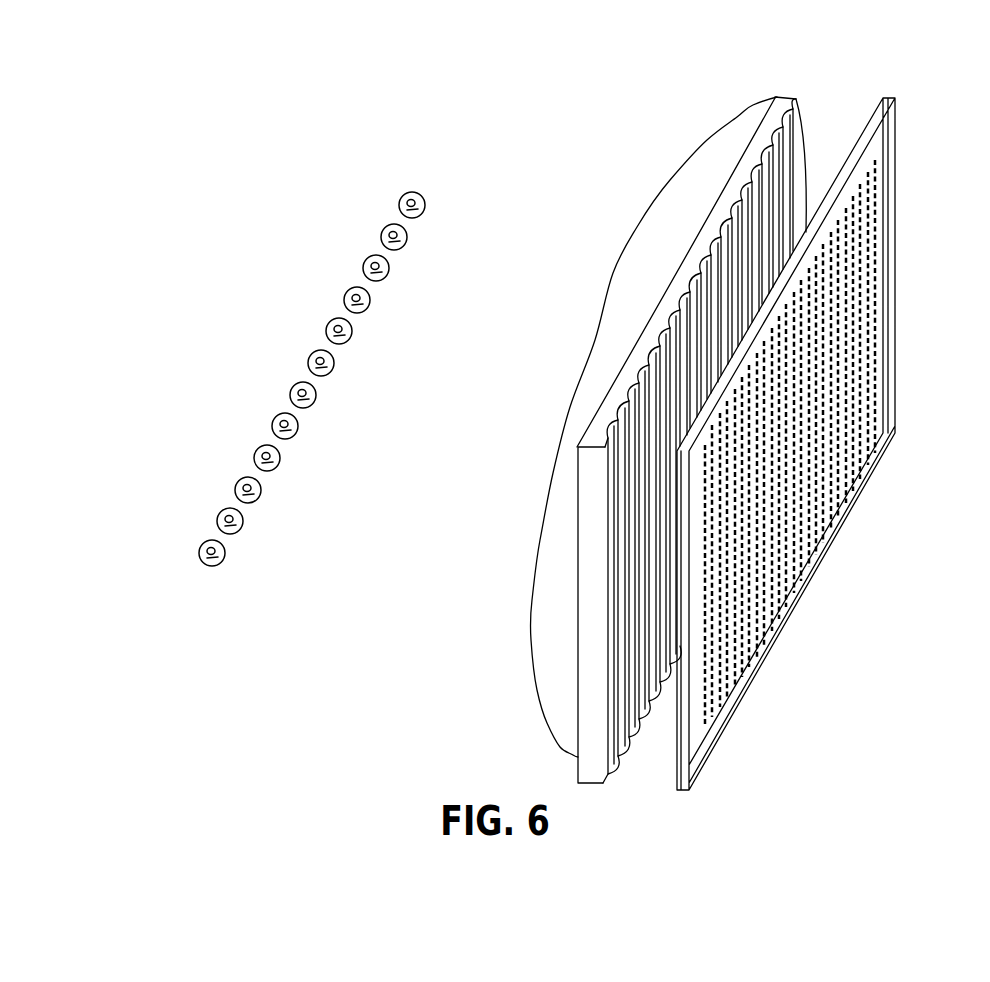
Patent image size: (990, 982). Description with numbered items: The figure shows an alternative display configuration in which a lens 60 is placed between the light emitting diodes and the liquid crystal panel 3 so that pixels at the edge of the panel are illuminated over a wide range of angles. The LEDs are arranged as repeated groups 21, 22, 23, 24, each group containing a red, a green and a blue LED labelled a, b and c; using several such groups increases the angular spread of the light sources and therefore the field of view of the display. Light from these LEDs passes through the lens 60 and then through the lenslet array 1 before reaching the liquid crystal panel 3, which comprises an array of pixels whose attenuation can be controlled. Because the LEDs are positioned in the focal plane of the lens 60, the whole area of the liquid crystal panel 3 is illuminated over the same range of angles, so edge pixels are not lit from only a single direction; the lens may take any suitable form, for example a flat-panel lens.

The lenslet array 1 is at (812, 105).
The liquid crystal panel 3 is at (901, 320).
The lens 60 is at (641, 221).
The group of red, green and blue LEDs 21 is at (200, 462).
The group of red, green and blue LEDs 22 is at (255, 368).
The group of red, green and blue LEDs 23 is at (310, 274).
The group of red, green and blue LEDs 24 is at (364, 181).